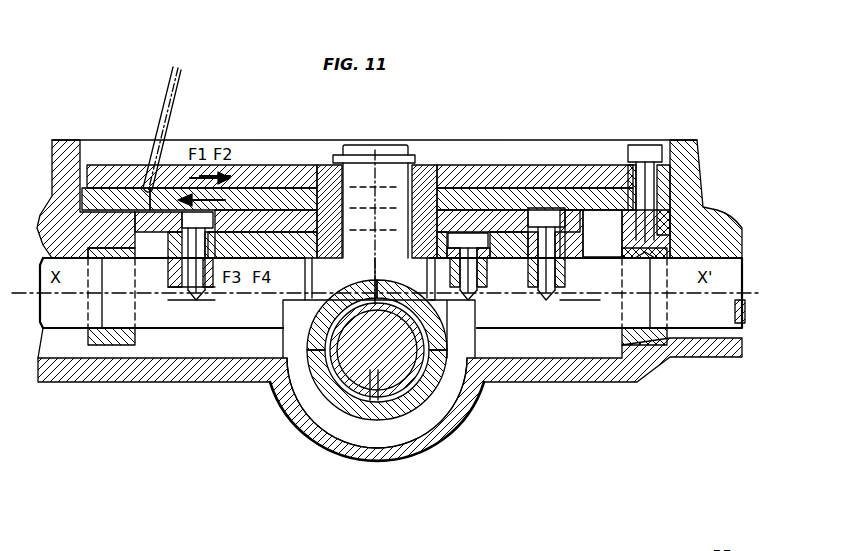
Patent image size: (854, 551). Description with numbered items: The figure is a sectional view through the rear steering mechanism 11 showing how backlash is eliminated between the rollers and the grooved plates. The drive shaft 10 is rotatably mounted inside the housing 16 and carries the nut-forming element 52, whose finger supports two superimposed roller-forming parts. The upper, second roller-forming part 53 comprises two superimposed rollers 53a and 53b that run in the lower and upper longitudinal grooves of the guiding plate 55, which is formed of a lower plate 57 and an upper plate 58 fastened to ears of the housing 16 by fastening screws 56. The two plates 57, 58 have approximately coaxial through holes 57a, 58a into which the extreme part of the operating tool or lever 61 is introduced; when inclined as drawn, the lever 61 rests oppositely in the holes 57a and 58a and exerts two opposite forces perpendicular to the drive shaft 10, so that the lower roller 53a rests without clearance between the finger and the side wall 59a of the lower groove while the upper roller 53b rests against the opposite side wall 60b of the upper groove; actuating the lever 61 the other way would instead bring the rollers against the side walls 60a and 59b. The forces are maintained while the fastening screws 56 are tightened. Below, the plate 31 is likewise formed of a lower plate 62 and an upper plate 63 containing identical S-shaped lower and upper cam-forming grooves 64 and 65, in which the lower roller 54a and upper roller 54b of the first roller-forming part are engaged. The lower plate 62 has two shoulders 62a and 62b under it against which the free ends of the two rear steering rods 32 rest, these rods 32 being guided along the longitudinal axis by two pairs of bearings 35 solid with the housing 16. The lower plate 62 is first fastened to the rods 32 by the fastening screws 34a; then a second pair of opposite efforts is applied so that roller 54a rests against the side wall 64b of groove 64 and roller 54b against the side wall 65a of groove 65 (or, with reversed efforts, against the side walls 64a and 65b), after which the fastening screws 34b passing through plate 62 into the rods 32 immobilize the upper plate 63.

The drive shaft 10 is at (348, 448).
The rear steering mechanism 11 is at (202, 433).
The housing 16 is at (292, 435).
The plate 31 is at (703, 210).
The rear steering rods 32 is at (158, 320).
The fastening screws 34a is at (513, 290).
The fastening screws 34b is at (180, 300).
The bearings 35 is at (104, 365).
The nut-forming element 52 is at (392, 457).
The second roller-forming part 53 is at (468, 200).
The lower roller 53a is at (360, 180).
The upper roller 53b is at (325, 175).
The lower roller 54a is at (390, 260).
The upper roller 54b is at (332, 262).
The guiding plate 55 is at (672, 184).
The fastening screws 56 is at (640, 153).
The lower plate 57 is at (590, 190).
The through hole 57a is at (108, 185).
The upper plate 58 is at (600, 190).
The through hole 58a is at (183, 178).
The side wall 59a is at (305, 185).
The side wall 59b is at (440, 185).
The side wall 60a is at (290, 185).
The side wall 60b is at (395, 162).
The operating tool or lever 61 is at (157, 110).
The lower plate 62 is at (580, 258).
The shoulder 62a is at (300, 280).
The shoulder 62b is at (452, 375).
The upper plate 63 is at (608, 232).
The lower groove 64 is at (437, 342).
The side wall 64a is at (300, 312).
The side wall 64b is at (415, 415).
The upper groove 65 is at (548, 185).
The side wall 65a is at (240, 185).
The side wall 65b is at (525, 190).